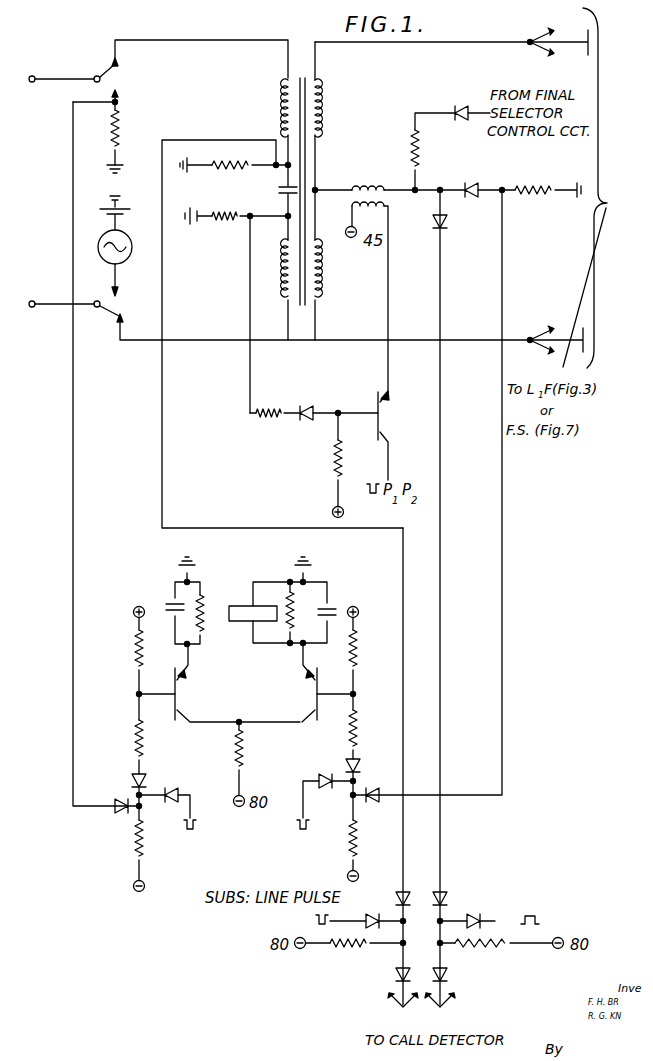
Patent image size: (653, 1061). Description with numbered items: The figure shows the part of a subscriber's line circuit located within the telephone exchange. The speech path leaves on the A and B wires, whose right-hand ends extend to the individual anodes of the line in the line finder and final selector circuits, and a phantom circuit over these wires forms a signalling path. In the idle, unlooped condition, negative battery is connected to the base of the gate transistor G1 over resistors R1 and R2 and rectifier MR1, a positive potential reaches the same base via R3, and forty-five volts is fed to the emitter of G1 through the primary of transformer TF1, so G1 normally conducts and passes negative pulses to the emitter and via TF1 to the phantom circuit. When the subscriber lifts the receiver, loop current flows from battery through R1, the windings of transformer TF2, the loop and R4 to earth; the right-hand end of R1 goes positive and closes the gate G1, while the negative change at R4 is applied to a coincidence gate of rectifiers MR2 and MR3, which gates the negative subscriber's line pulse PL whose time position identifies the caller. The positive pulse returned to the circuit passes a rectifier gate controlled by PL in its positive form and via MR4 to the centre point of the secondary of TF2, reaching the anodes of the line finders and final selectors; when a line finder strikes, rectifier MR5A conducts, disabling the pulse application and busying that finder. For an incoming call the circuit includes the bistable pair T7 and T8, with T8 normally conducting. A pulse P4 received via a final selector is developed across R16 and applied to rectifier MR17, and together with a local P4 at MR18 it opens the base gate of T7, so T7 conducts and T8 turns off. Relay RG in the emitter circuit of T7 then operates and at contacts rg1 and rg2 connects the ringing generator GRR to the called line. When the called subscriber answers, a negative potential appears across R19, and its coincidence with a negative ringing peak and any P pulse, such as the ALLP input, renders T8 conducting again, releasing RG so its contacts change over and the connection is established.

The relay contact rg1 is at (158, 61).
The relay contact rg2 is at (172, 320).
The resistor R19 is at (118, 130).
The ringing generator GRR is at (127, 246).
The transformer TF2 is at (300, 177).
The resistor R4 is at (234, 177).
The resistor R1 is at (236, 310).
The A wire A is at (535, 38).
The B wire B is at (537, 337).
The transformer TF1 is at (367, 278).
The rectifier MR5A is at (472, 179).
The resistor R16 is at (536, 202).
The rectifier MR4 is at (456, 597).
The resistor R2 is at (275, 423).
The rectifier MR1 is at (337, 402).
The gate transistor G1 is at (366, 428).
The resistor R3 is at (327, 465).
The transistor T8 is at (237, 683).
The transistor T7 is at (320, 682).
The relay RG is at (275, 601).
The ALL P pulse input ALLP is at (175, 821).
The rectifier MR18 is at (328, 796).
The P4 pulse P4 is at (300, 838).
The rectifier MR17 is at (382, 804).
The rectifier MR3 is at (410, 896).
The rectifier MR2 is at (366, 927).
The subscriber's line pulse PL is at (416, 922).